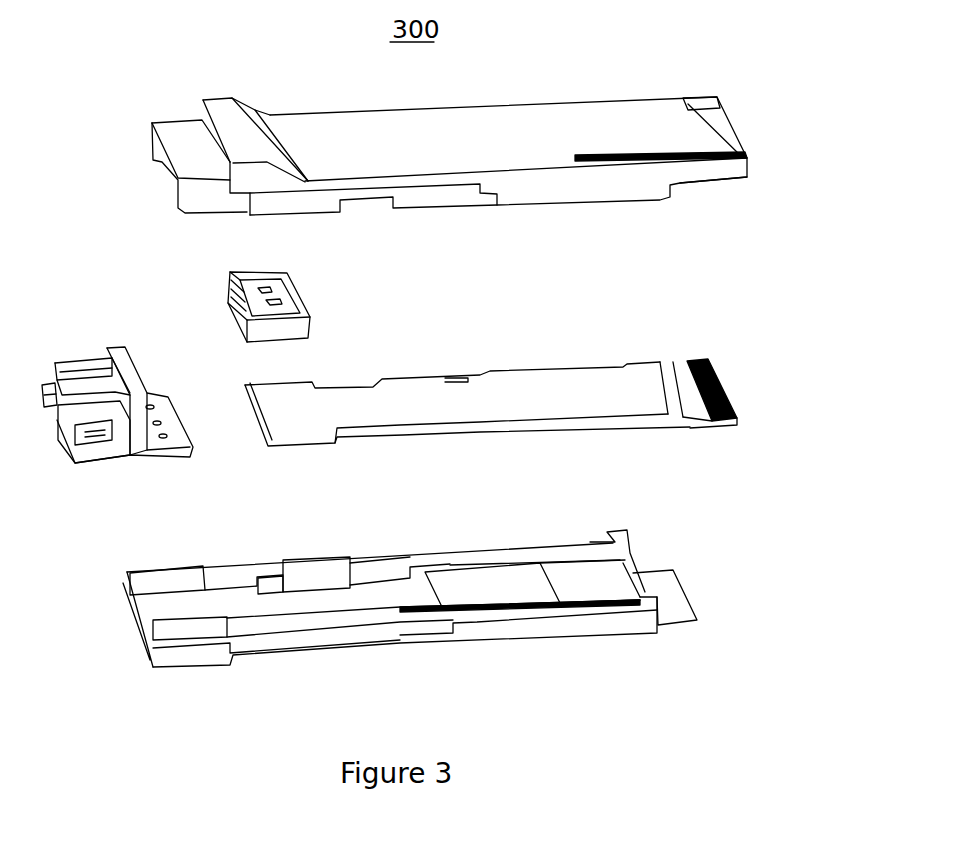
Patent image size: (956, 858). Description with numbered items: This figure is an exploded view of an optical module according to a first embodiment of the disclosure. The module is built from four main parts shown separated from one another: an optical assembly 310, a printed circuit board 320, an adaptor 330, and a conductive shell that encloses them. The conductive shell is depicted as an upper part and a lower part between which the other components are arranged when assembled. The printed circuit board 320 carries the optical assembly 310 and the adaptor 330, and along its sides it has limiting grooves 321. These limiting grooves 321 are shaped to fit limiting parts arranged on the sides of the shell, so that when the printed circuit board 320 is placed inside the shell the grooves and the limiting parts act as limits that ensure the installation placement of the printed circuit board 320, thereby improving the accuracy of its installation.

The optical assembly 310 is at (227, 295).
The printed circuit board 320 is at (560, 383).
The limiting grooves 321 is at (347, 383).
The adaptor 330 is at (87, 363).